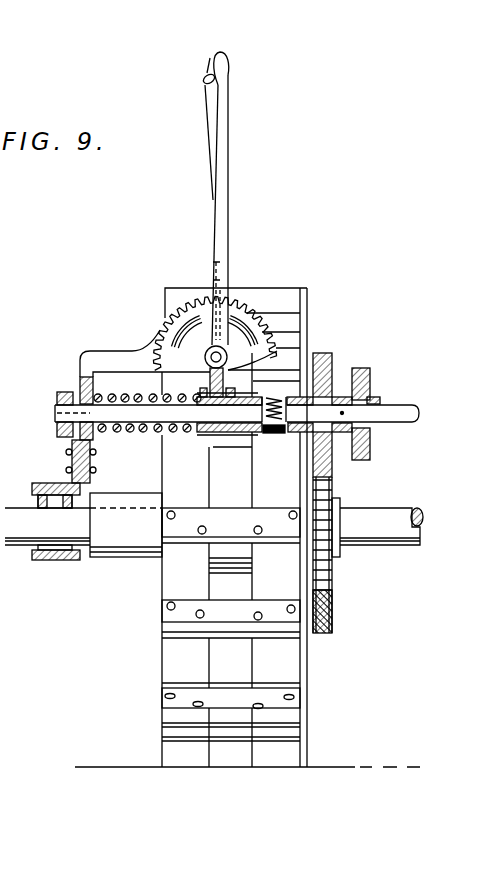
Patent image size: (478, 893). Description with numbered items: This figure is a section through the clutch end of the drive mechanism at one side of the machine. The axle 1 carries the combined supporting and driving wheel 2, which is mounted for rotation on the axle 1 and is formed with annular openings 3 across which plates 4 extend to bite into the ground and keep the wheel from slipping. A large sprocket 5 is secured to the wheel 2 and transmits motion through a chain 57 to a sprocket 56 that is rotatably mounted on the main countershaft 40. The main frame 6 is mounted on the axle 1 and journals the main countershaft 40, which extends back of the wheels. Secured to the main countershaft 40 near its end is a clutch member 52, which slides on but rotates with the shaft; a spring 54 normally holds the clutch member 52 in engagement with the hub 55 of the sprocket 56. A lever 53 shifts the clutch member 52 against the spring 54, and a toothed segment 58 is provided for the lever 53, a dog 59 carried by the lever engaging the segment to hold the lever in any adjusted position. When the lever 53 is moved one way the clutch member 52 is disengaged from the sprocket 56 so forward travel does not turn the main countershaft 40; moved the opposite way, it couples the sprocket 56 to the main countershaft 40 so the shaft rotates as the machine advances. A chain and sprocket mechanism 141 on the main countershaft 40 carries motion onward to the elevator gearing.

The axle 1 is at (372, 518).
The combined supporting and driving wheel 2 is at (300, 689).
The annular opening 3 is at (225, 584).
The plate 4 is at (175, 630).
The large sprocket 5 is at (333, 622).
The main frame 6 is at (17, 503).
The main countershaft 40 is at (397, 412).
The clutch member 52 is at (260, 397).
The lever 53 is at (228, 207).
The spring 54 is at (125, 392).
The hub 55 is at (280, 436).
The sprocket 56 is at (332, 353).
The chain 57 is at (335, 482).
The toothed segment 58 is at (238, 317).
The dog 59 is at (205, 272).
The chain and sprocket mechanism 141 is at (370, 378).